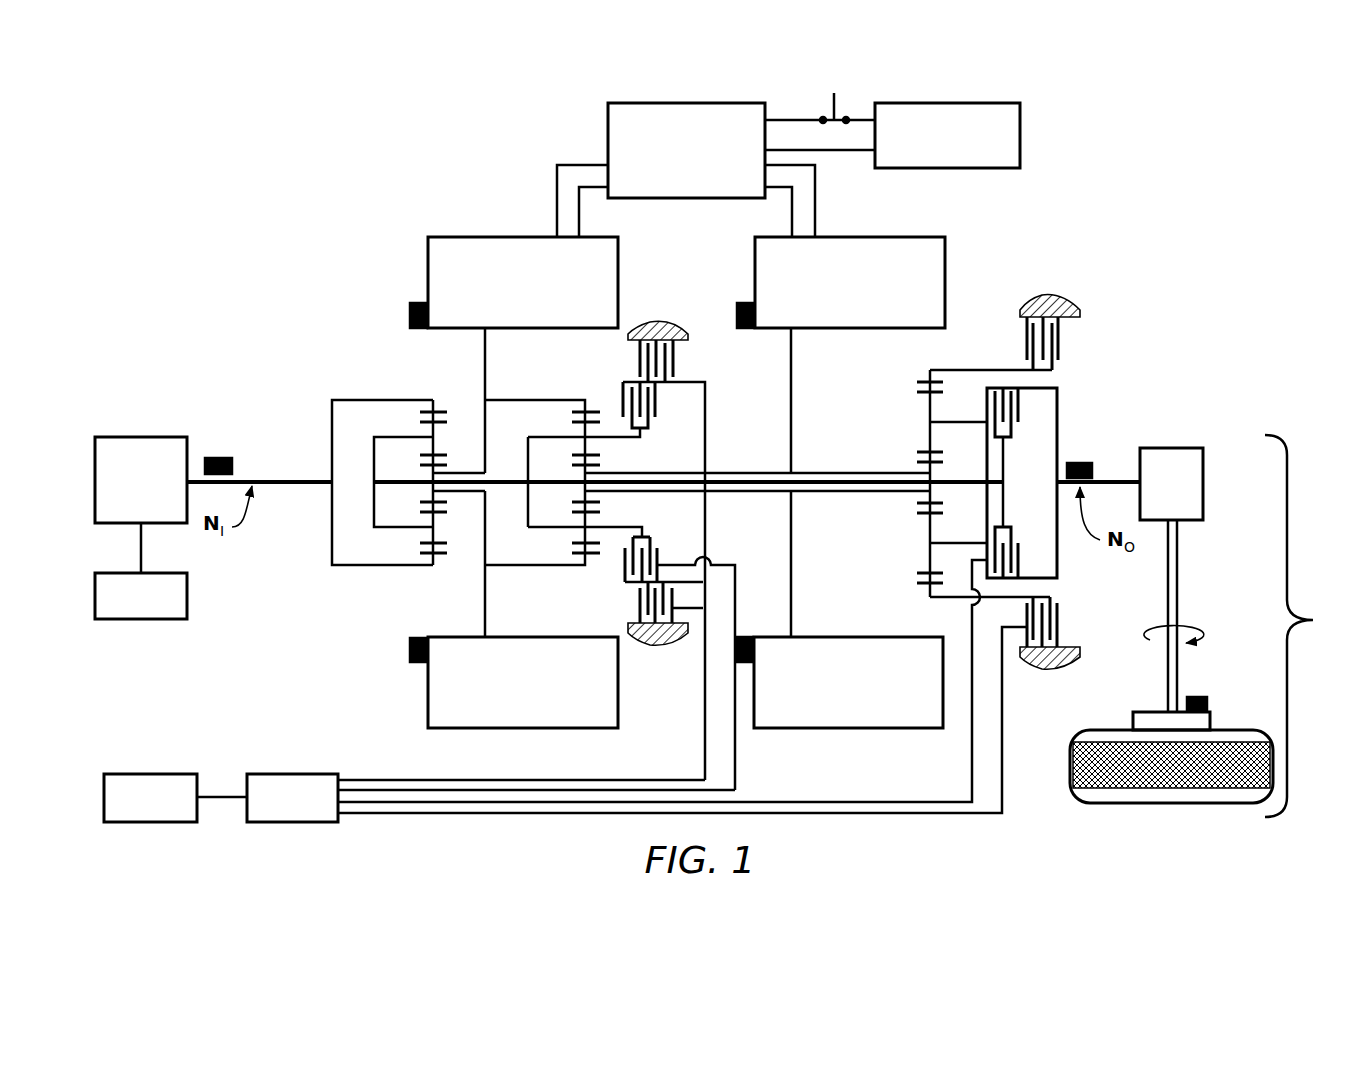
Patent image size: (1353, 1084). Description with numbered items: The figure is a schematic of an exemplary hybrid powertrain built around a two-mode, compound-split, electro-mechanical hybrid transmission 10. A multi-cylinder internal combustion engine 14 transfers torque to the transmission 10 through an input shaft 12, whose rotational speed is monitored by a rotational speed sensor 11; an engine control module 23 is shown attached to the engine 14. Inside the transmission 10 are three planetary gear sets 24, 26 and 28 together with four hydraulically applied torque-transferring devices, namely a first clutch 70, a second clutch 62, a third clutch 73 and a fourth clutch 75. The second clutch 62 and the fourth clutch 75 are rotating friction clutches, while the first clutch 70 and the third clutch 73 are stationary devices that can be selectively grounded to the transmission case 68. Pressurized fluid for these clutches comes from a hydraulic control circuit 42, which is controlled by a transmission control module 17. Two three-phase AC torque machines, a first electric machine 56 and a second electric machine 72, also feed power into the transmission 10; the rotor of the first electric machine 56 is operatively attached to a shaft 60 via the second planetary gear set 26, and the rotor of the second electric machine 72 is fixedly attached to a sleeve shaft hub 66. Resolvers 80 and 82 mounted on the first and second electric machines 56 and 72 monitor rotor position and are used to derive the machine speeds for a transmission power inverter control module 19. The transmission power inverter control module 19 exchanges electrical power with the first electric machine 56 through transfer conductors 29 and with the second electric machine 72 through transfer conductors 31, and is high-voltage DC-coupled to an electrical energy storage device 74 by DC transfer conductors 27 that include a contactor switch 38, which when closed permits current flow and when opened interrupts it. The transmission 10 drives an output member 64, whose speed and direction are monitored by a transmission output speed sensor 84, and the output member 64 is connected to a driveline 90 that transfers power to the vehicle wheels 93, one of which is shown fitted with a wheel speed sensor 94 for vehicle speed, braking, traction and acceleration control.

The electro-mechanical hybrid transmission 10 is at (391, 201).
The rotational speed sensor 11 is at (216, 457).
The input shaft 12 is at (294, 479).
The engine 14 is at (150, 437).
The transmission control module 17 is at (140, 773).
The transmission power inverter control module 19 is at (607, 118).
The engine control module 23 is at (187, 611).
The first planetary gear set 24 is at (426, 396).
The second planetary gear set 26 is at (583, 396).
The DC transfer conductors 27 is at (775, 119).
The third planetary gear set 28 is at (920, 375).
The transfer conductors 29 is at (556, 200).
The transfer conductors 31 is at (816, 195).
The contactor switch 38 is at (838, 97).
The hydraulic control circuit 42 is at (262, 773).
The first electric machine 56 is at (427, 268).
The shaft 60 is at (980, 480).
The clutch C2 62 is at (1024, 426).
The output member 64 is at (1113, 480).
The sleeve shaft hub 66 is at (828, 472).
The transmission case 68 is at (662, 320).
The clutch C1 70 is at (1020, 336).
The second electric machine 72 is at (946, 255).
The clutch C3 73 is at (678, 365).
The electrical energy storage device 74 is at (1021, 125).
The clutch C4 75 is at (659, 413).
The resolver 80 is at (409, 312).
The resolver 82 is at (741, 302).
The transmission output speed sensor 84 is at (1080, 462).
The driveline 90 is at (1311, 619).
The vehicle wheel 93 is at (1132, 720).
The wheel speed sensor 94 is at (1197, 696).